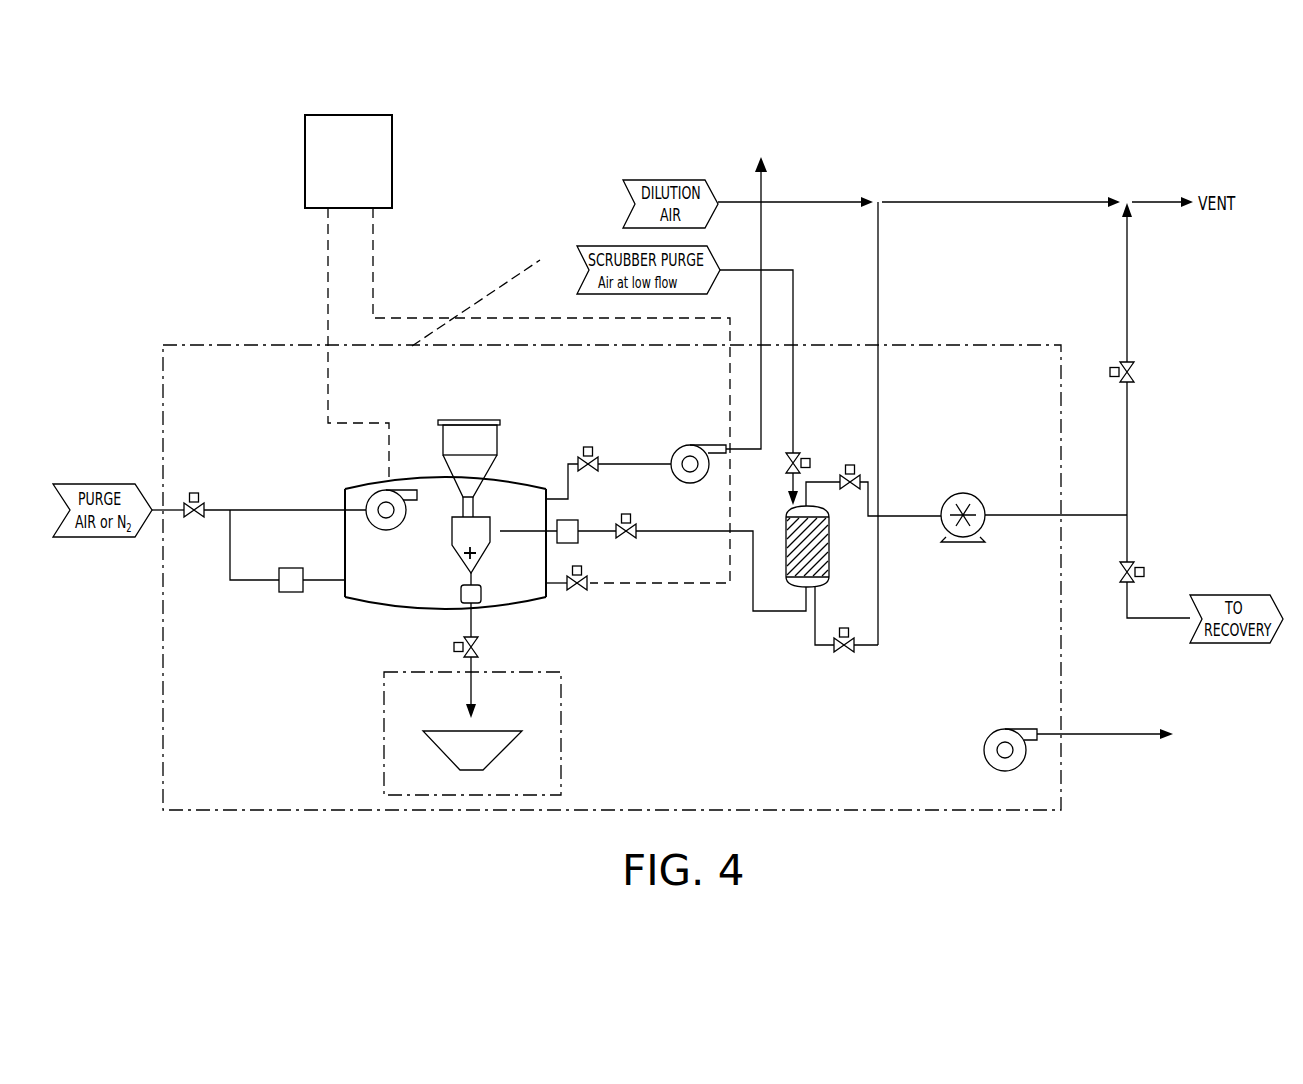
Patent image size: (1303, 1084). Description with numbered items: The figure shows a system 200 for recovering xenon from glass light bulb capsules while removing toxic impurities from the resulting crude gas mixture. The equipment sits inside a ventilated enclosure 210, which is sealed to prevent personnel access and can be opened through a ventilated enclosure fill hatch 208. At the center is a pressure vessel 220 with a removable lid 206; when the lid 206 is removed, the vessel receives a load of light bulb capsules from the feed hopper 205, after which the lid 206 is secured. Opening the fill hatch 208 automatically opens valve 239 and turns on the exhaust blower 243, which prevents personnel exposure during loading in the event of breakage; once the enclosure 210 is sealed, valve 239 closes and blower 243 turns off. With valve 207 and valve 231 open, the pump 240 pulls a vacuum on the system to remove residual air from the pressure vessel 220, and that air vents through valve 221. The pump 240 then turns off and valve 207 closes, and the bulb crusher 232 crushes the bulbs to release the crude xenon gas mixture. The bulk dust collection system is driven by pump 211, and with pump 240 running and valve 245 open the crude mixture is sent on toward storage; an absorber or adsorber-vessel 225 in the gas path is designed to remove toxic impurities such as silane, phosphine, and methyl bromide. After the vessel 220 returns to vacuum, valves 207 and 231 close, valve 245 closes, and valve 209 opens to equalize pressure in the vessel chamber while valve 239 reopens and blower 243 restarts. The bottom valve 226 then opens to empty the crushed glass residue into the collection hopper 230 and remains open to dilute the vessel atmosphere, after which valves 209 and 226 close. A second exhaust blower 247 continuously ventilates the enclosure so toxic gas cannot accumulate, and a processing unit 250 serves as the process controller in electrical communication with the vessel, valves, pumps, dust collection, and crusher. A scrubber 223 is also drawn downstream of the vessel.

The system 200 is at (975, 153).
The feed hopper 205 is at (467, 482).
The lid 206 is at (475, 420).
The valve 207 is at (629, 540).
The ventilated enclosure fill hatch 208 is at (475, 303).
The valve 209 is at (578, 592).
The ventilated enclosure 210 is at (612, 577).
The pump 211 is at (391, 531).
The pressure vessel 220 is at (397, 607).
The valve 221 is at (1138, 375).
The scrubber 223 is at (833, 555).
The absorber or adsorber-vessel 225 is at (291, 593).
The bottom valve 226 is at (480, 651).
The collection hopper 230 is at (472, 746).
The valve 231 is at (850, 473).
The bulb crusher 232 is at (465, 530).
The valve 239 is at (588, 454).
The pump 240 is at (978, 498).
The exhaust blower 243 is at (690, 445).
The valve 245 is at (1120, 574).
The exhaust blower 247 is at (991, 737).
The processing unit 250 is at (348, 161).